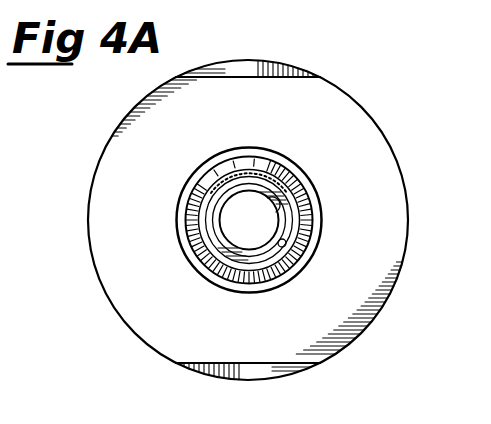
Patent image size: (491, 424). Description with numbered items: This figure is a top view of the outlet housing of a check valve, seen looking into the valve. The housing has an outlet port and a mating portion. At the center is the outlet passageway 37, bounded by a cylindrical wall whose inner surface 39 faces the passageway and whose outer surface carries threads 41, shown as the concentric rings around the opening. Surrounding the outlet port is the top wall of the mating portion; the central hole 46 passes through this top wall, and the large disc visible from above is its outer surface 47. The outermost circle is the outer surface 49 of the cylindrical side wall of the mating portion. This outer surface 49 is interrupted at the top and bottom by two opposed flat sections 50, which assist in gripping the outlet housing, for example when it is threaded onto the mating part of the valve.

The outlet passageway 37 is at (182, 241).
The inner surface 39 is at (287, 240).
The threads 41 is at (305, 214).
The central hole 46 is at (291, 182).
The outer surface 47 is at (342, 108).
The outer surface 49 is at (98, 166).
The opposed flat sections 50 is at (262, 65).